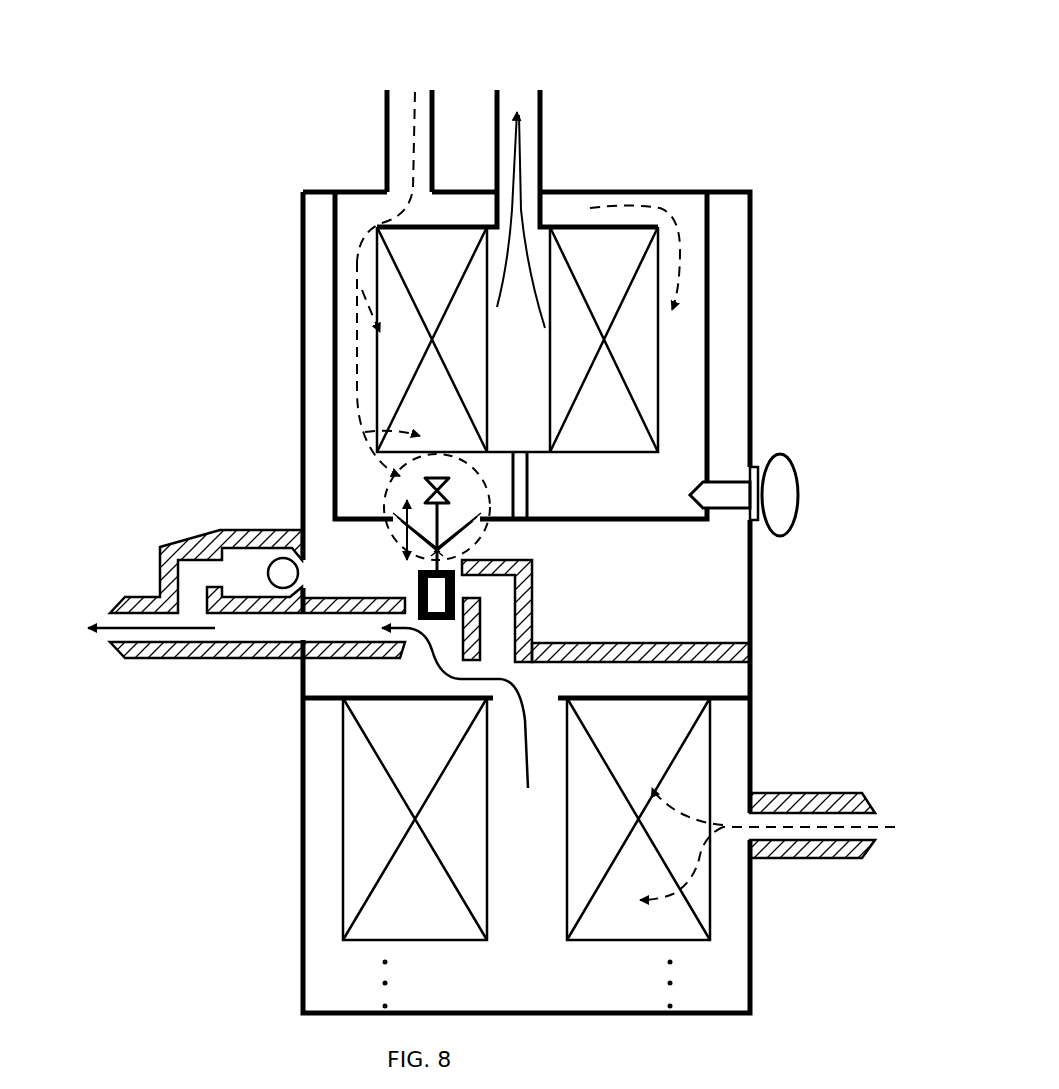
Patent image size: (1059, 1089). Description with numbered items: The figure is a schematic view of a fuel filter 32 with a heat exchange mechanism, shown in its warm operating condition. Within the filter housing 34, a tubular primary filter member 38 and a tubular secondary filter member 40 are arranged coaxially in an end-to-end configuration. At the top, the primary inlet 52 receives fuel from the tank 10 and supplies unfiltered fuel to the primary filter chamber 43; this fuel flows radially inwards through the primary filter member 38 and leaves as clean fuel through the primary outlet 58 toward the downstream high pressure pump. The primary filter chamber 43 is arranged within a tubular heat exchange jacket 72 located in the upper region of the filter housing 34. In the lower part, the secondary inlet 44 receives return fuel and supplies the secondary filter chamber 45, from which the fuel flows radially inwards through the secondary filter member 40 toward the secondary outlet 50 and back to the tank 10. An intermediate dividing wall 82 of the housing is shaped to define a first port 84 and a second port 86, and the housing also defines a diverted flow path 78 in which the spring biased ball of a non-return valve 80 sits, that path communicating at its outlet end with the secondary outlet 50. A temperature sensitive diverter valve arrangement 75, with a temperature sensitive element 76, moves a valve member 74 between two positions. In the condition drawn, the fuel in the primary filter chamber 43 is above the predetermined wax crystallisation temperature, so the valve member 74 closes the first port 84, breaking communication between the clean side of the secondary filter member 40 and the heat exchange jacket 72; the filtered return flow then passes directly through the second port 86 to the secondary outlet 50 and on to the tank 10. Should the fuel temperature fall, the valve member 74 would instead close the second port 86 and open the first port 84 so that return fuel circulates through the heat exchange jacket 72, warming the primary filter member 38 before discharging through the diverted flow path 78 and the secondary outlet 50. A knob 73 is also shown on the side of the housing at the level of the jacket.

The tank 10 is at (35, 626).
The filter 32 is at (716, 166).
The filter housing 34 is at (751, 205).
The primary filter member 38 is at (650, 338).
The secondary filter member 40 is at (356, 857).
The primary filter chamber 43 is at (685, 375).
The secondary inlet 44 is at (880, 815).
The secondary filter chamber 45 is at (728, 907).
The secondary outlet 50 is at (105, 637).
The primary inlet 52 is at (387, 95).
The primary outlet 58 is at (543, 95).
The heat exchange jacket 72 is at (733, 430).
The knob 73 is at (801, 495).
The valve member 74 is at (418, 582).
The temperature sensitive diverter valve arrangement 75 is at (383, 494).
The temperature sensitive element 76 is at (452, 494).
The diverted flow path 78 is at (237, 572).
The non-return valve 80 is at (263, 556).
The intermediate dividing wall 82 is at (694, 642).
The first port 84 is at (470, 590).
The second port 86 is at (418, 660).